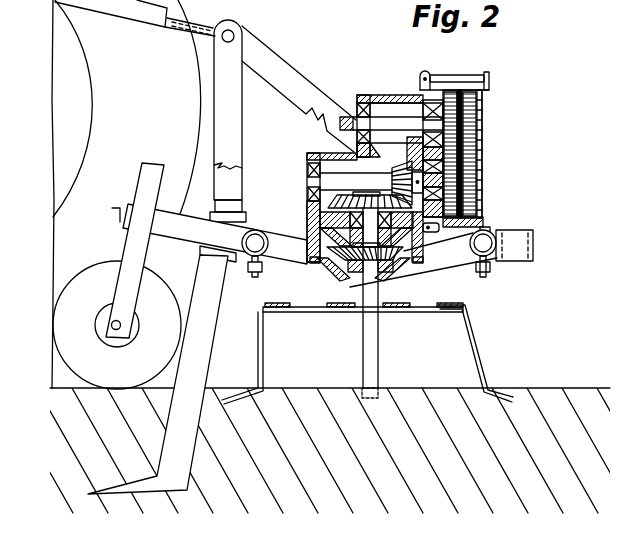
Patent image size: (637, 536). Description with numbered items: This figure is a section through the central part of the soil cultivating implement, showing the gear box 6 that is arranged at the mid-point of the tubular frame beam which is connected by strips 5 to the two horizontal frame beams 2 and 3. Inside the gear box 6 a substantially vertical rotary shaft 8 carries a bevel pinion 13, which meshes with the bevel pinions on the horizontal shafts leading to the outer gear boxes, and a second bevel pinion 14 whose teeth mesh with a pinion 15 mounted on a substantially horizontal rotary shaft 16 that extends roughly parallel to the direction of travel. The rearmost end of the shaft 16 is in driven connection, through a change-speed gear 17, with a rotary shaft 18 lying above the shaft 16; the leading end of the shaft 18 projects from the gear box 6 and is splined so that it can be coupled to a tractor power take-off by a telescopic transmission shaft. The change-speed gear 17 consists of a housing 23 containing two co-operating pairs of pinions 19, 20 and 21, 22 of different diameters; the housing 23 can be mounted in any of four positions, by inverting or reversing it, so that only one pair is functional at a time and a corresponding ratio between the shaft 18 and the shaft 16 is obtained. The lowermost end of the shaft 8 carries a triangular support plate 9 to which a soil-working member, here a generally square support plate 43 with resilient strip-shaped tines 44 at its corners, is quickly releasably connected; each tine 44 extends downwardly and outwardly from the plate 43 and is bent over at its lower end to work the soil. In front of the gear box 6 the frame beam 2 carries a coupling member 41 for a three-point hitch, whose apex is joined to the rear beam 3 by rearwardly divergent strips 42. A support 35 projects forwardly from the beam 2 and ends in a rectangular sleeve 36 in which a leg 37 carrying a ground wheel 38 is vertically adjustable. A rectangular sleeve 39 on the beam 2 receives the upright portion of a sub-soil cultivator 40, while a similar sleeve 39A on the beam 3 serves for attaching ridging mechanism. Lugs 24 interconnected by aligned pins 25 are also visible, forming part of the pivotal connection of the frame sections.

The frame beam 2 is at (262, 233).
The frame beam 3 is at (490, 224).
The strip 5 is at (457, 262).
The gear box 6 is at (348, 270).
The rotary shaft 8 is at (337, 313).
The support plate 9 is at (384, 313).
The bevel pinion 13 is at (394, 264).
The second bevel pinion 14 is at (330, 200).
The pinion 15 is at (401, 166).
The rotary shaft 16 is at (344, 152).
The change-speed gear 17 is at (488, 103).
The rotary shaft 18 is at (382, 122).
The pinion 19 is at (453, 160).
The pinion 20 is at (450, 100).
The pinion 21 is at (477, 197).
The pinion 22 is at (480, 132).
The housing 23 is at (480, 110).
The lug 24 is at (263, 270).
The pin 25 is at (248, 265).
The support 35 is at (181, 250).
The rectangular sleeve 36 is at (136, 218).
The leg 37 is at (153, 167).
The ground wheel 38 is at (97, 268).
The rectangular sleeve 39 is at (261, 231).
The rectangular sleeve 39A is at (528, 230).
The sub-soil cultivator 40 is at (192, 362).
The coupling member 41 is at (227, 78).
The strip 42 is at (282, 67).
The support plate 43 is at (320, 313).
The tine 44 is at (265, 366).